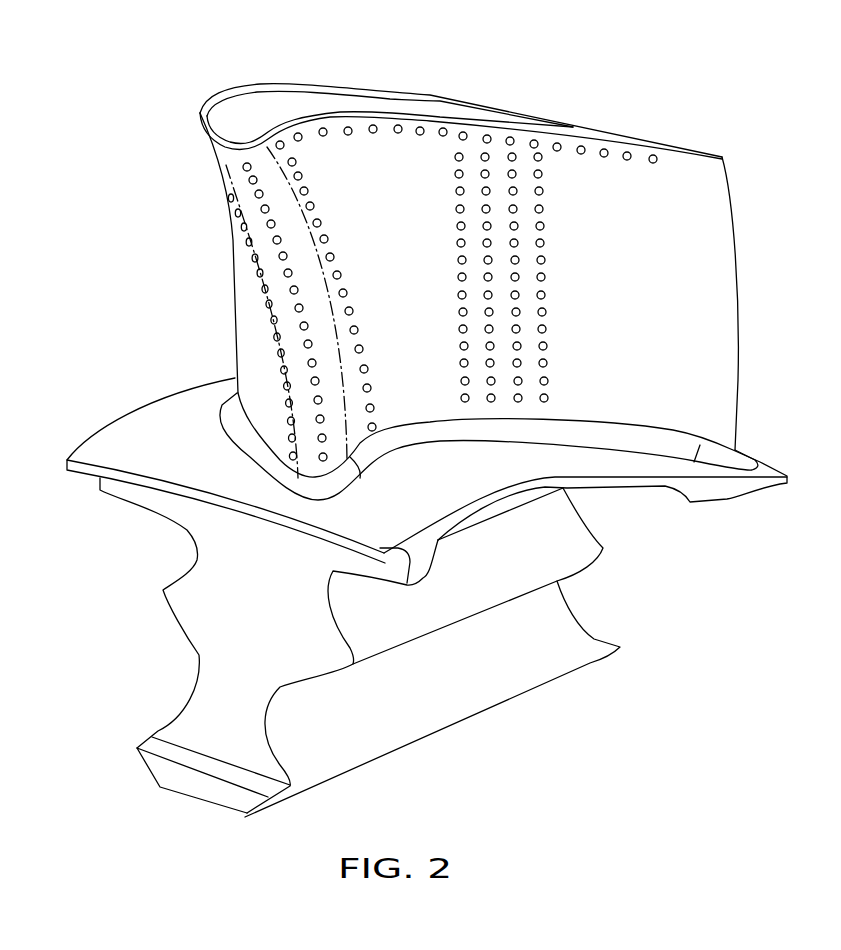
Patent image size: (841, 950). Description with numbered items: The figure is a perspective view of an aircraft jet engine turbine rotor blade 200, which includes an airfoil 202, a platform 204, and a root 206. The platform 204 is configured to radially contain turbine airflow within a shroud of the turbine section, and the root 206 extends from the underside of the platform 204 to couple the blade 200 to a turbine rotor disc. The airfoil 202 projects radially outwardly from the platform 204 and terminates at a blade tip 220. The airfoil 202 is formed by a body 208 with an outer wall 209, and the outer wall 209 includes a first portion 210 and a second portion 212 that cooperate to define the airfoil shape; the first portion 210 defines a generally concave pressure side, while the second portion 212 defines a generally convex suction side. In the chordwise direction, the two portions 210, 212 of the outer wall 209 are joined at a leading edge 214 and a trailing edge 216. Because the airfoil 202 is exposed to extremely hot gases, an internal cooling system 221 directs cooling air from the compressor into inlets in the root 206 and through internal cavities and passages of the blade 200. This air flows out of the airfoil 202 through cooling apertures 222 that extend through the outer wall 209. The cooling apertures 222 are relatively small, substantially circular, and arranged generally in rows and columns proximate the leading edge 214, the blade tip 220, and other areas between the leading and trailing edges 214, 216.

The turbine rotor blade 200 is at (439, 412).
The airfoil 202 is at (446, 276).
The platform 204 is at (446, 494).
The root 206 is at (360, 647).
The body 208 is at (243, 312).
The outer wall 209 is at (390, 100).
The first portion 210 is at (449, 304).
The second portion 212 is at (269, 303).
The leading edge 214 is at (233, 295).
The trailing edge 216 is at (767, 303).
The blade tip 220 is at (401, 112).
The internal cooling system 221 is at (466, 108).
The cooling apertures 222 is at (519, 277).